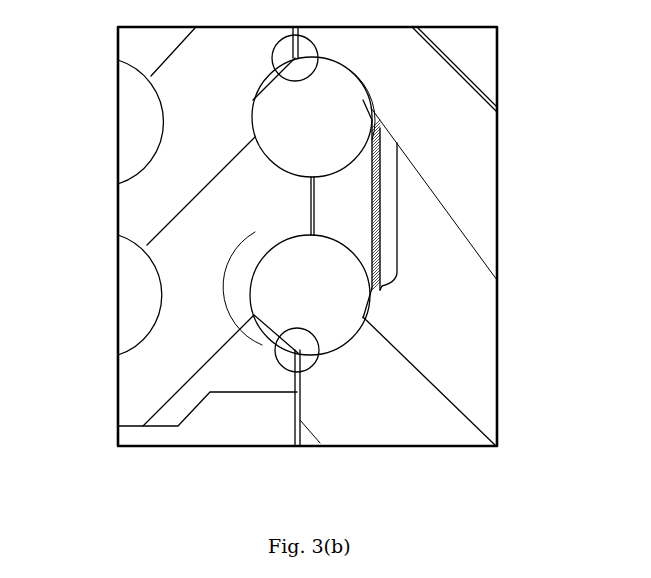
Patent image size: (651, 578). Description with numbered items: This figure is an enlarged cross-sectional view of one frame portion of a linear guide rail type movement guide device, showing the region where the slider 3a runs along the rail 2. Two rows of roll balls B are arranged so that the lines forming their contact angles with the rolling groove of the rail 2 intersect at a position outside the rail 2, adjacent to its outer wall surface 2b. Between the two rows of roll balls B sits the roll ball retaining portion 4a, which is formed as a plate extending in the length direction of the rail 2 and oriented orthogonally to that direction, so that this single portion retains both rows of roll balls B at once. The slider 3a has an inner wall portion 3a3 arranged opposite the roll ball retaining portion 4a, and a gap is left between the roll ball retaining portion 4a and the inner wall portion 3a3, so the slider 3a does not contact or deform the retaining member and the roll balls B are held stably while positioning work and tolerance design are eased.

The rail 2 is at (465, 208).
The outer wall surface 2b is at (398, 208).
The slider 3a is at (182, 367).
The inner wall portion 3a3 is at (294, 195).
The roll ball retaining portion 4a is at (375, 163).
The roll ball B is at (275, 95).